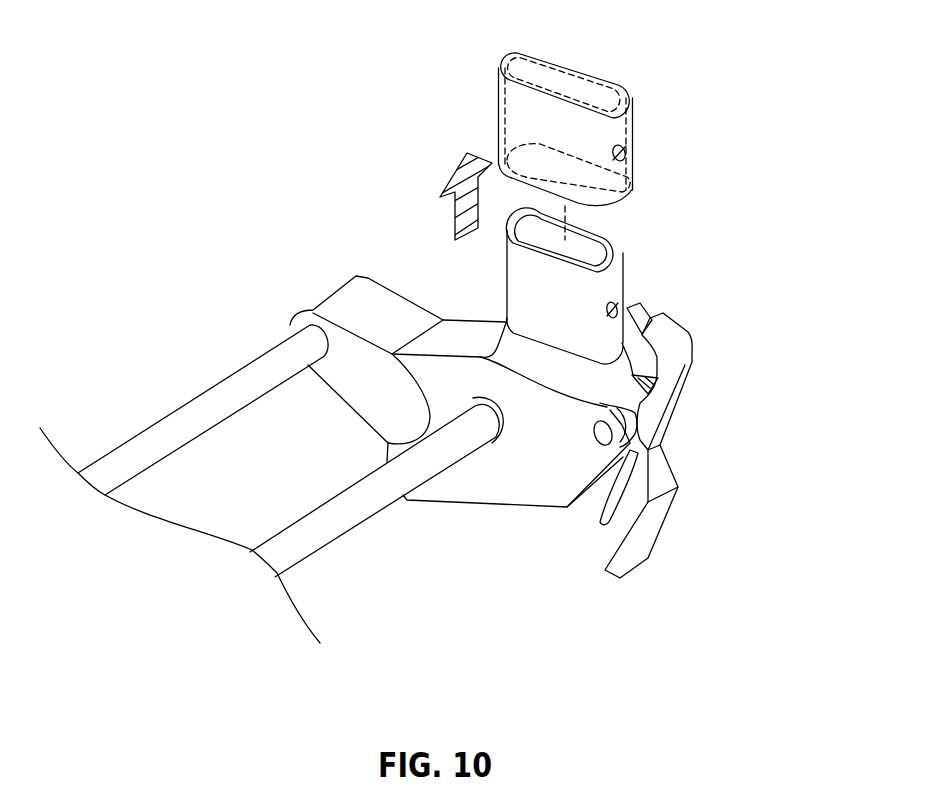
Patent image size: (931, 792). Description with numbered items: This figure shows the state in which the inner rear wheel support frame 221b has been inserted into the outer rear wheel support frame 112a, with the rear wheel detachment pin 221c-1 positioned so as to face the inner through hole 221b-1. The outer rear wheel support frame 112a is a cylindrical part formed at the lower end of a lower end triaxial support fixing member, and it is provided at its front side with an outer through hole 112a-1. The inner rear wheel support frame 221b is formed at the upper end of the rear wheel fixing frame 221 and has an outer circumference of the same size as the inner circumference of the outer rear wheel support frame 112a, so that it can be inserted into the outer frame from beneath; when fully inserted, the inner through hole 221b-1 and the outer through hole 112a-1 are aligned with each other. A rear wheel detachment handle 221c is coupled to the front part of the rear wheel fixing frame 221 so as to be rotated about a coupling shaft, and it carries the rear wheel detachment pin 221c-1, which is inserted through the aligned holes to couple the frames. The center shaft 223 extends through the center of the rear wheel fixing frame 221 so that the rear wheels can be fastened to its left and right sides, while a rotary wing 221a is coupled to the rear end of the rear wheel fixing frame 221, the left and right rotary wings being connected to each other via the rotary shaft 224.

The outer rear wheel support frame part 112a is at (600, 128).
The outer through hole 112a-1 is at (623, 155).
The rear wheel fixing frame 221 is at (468, 338).
The rotary wing 221a is at (355, 310).
The inner rear wheel support frame 221b is at (560, 288).
The inner through hole 221b-1 is at (618, 308).
The rear wheel detachment handle 221c is at (672, 358).
The rear wheel detachment pin 221c-1 is at (637, 317).
The center shaft 223 is at (345, 515).
The rotary shaft 224 is at (230, 392).